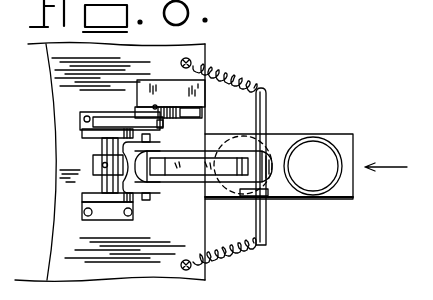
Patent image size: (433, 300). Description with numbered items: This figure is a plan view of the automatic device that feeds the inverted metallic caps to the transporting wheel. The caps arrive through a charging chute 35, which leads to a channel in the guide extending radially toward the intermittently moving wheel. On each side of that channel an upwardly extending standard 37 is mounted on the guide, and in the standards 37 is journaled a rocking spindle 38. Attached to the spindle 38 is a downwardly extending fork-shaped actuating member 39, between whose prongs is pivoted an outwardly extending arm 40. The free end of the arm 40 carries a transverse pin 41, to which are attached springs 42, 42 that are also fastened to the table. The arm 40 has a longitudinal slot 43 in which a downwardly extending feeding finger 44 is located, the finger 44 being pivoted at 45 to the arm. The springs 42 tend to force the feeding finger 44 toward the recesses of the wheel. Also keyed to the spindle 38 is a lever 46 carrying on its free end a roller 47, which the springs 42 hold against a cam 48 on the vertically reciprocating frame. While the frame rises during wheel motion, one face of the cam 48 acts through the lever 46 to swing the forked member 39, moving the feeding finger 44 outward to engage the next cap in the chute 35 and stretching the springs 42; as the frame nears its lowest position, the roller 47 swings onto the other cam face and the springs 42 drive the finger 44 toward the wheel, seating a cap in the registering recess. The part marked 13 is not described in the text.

The frame 13 is at (424, 287).
The charging chute 35 is at (343, 137).
The standard 37 is at (82, 131).
The rocking spindle 38 is at (102, 143).
The fork-shaped actuating member 39 is at (142, 201).
The arm 40 is at (208, 180).
The transverse pin 41 is at (263, 106).
The springs 42 is at (230, 77).
The longitudinal slot 43 is at (245, 162).
The feeding finger 44 is at (192, 168).
The pivot 45 is at (261, 193).
The lever 46 is at (116, 117).
The roller 47 is at (145, 108).
The cam 48 is at (200, 101).